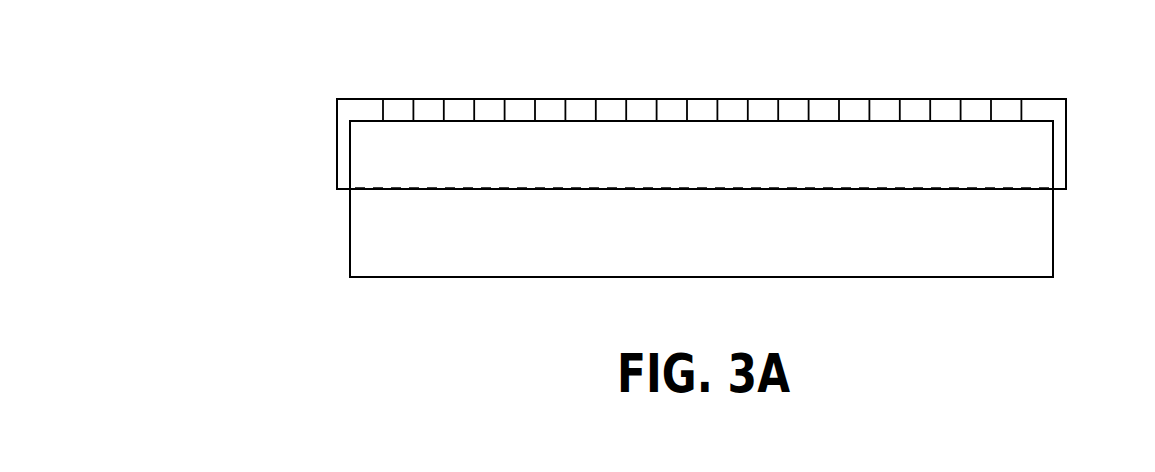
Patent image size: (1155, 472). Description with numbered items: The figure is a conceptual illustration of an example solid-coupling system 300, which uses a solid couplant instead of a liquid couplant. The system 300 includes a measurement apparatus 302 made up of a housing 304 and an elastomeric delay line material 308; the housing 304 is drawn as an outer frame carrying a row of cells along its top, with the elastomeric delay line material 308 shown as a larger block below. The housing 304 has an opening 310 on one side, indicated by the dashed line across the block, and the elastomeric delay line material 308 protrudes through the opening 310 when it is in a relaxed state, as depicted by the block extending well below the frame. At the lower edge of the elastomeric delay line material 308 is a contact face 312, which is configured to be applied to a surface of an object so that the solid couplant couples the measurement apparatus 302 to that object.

The solid-coupling system 300 is at (188, 88).
The measurement apparatus 302 is at (315, 88).
The housing 304 is at (792, 99).
The elastomeric delay line material 308 is at (1054, 239).
The opening 310 is at (370, 207).
The contact face 312 is at (466, 290).